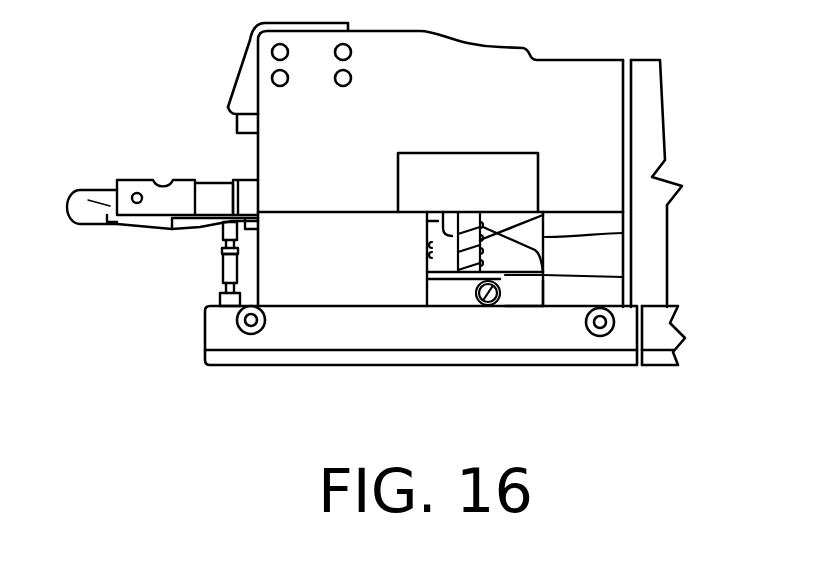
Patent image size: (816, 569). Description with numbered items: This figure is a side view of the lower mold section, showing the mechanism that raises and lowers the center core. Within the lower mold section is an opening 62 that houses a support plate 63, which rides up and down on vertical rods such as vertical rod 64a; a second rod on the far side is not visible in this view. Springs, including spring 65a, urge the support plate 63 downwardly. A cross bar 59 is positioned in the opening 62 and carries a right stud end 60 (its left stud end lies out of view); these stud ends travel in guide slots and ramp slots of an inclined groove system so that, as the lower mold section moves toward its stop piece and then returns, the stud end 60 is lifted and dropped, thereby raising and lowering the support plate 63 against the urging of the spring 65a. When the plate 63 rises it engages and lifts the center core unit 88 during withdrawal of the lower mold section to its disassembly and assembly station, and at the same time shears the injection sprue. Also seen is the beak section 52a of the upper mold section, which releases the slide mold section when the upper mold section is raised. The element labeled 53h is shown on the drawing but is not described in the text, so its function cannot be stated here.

The beak section 52a is at (247, 83).
The clamp actuator 53h is at (153, 178).
The spring 65a is at (458, 214).
The vertical rod 64a is at (623, 233).
The support plate 63 is at (623, 277).
The center core unit 88 is at (427, 222).
The lower mold section opening 62 is at (428, 293).
The right stud end 60 is at (485, 303).
The cross bar 59 is at (510, 298).